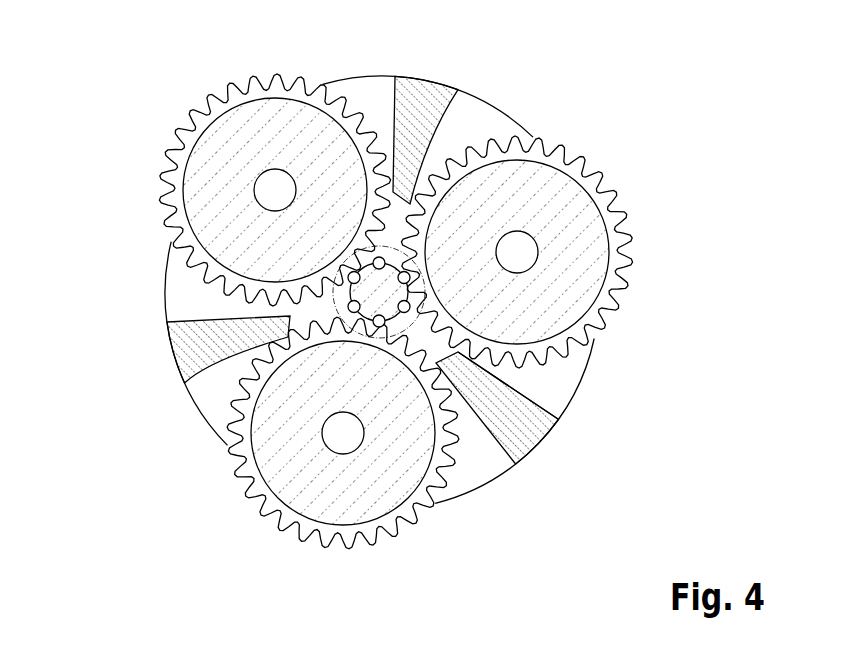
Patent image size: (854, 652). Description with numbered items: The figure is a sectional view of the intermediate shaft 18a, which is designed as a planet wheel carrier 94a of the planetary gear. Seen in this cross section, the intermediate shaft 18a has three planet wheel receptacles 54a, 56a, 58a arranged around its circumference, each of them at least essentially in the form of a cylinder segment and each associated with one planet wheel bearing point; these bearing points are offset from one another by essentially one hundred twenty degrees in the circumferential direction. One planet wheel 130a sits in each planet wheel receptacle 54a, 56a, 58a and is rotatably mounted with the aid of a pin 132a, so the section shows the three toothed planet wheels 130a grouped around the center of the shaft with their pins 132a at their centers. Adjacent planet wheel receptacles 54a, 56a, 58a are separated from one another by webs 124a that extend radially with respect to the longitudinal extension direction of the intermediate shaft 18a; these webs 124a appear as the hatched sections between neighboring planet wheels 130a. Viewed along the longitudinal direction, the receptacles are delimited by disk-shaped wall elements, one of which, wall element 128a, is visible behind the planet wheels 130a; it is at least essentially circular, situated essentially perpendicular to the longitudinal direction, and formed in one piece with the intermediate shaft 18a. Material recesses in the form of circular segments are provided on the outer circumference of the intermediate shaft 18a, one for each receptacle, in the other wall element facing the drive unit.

The intermediate shaft 18a is at (403, 302).
The planet wheel carrier 94a is at (634, 66).
The planet wheel receptacle 54a is at (490, 118).
The planet wheel receptacle 58a is at (203, 405).
The planet wheel receptacle 56a is at (265, 196).
The web 124a is at (423, 100).
The wall element 128a is at (544, 388).
The planet wheel 130a is at (248, 125).
The pin 132a is at (521, 256).